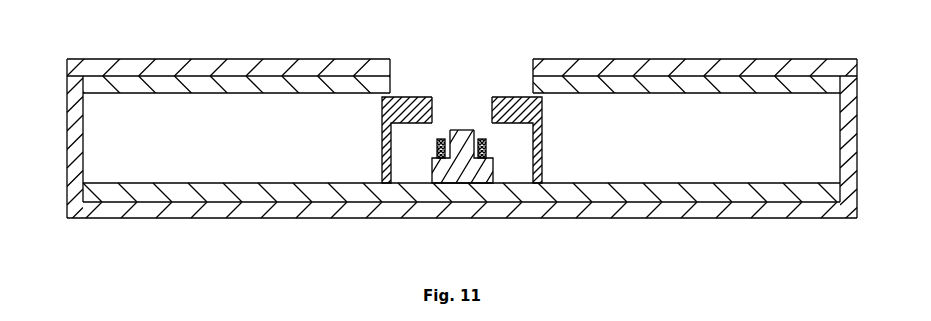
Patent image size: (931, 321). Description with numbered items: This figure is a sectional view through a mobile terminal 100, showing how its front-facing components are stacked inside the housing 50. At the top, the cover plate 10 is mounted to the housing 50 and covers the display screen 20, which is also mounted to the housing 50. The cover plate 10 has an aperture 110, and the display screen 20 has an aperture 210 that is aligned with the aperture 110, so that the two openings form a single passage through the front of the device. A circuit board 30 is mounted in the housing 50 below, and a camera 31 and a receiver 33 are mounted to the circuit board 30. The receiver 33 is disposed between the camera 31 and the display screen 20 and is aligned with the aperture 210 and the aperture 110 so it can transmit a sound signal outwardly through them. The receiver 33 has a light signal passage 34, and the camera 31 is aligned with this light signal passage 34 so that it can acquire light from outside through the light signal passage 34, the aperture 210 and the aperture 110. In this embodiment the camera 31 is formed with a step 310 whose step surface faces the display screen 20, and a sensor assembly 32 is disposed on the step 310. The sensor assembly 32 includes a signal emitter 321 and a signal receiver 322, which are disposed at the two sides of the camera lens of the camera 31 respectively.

The mobile terminal 100 is at (57, 157).
The cover plate 10 is at (128, 68).
The display screen 20 is at (193, 83).
The aperture 110 is at (393, 61).
The aperture 210 is at (393, 80).
The circuit board 30 is at (180, 185).
The camera 31 is at (458, 163).
The step 310 is at (492, 151).
The sensor assembly 32 is at (572, 137).
The signal emitter 321 is at (486, 146).
The signal receiver 322 is at (437, 148).
The receiver 33 is at (385, 108).
The light signal passage 34 is at (452, 106).
The housing 50 is at (848, 172).